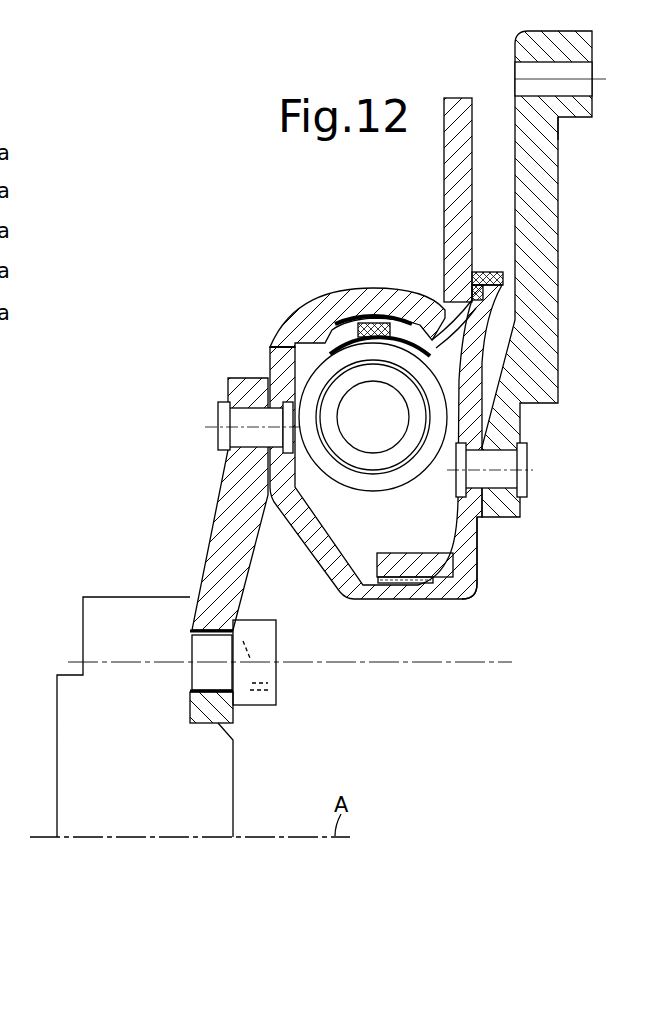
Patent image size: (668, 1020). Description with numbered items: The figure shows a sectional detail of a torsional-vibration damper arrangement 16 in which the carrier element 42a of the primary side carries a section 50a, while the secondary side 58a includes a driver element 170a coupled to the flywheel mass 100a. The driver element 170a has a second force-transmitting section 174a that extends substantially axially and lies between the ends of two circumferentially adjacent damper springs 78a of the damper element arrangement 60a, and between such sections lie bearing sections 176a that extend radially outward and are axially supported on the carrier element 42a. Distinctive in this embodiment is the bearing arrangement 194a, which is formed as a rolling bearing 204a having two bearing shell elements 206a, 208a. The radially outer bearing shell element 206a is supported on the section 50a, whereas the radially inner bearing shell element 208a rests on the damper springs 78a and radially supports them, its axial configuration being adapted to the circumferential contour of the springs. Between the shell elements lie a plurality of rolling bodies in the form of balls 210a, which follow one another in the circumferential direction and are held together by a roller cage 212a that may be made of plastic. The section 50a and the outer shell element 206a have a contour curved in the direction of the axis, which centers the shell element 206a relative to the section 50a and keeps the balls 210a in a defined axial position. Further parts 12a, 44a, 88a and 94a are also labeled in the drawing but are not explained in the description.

The brake carrier body 12a is at (70, 732).
The torsional-vibration damper arrangement 16 is at (322, 197).
The carrier element 42a is at (455, 106).
The actuating lever 44a is at (232, 538).
The section 50a is at (348, 296).
The secondary side 58a is at (578, 285).
The damper element arrangement 60a is at (408, 525).
The damper springs 78a is at (407, 473).
The friction strip 88a is at (403, 584).
The support block 94a is at (421, 592).
The flywheel mass 100a is at (558, 153).
The driver element 170a is at (470, 510).
The second force-transmitting section 174a is at (375, 383).
The bearing section 176a is at (493, 298).
The bearing arrangement 194a is at (340, 330).
The rolling bearing 204a is at (445, 312).
The bearing shell element 206a is at (360, 317).
The bearing shell element 208a is at (338, 342).
The balls 210a is at (385, 324).
The roller cage 212a is at (455, 339).